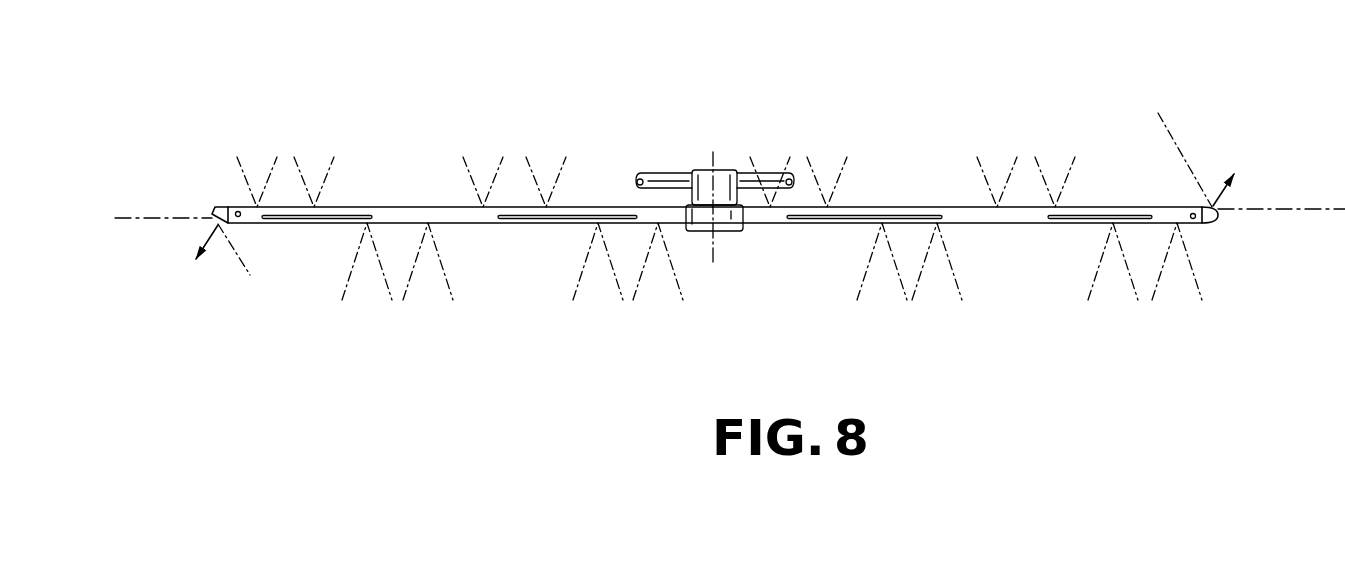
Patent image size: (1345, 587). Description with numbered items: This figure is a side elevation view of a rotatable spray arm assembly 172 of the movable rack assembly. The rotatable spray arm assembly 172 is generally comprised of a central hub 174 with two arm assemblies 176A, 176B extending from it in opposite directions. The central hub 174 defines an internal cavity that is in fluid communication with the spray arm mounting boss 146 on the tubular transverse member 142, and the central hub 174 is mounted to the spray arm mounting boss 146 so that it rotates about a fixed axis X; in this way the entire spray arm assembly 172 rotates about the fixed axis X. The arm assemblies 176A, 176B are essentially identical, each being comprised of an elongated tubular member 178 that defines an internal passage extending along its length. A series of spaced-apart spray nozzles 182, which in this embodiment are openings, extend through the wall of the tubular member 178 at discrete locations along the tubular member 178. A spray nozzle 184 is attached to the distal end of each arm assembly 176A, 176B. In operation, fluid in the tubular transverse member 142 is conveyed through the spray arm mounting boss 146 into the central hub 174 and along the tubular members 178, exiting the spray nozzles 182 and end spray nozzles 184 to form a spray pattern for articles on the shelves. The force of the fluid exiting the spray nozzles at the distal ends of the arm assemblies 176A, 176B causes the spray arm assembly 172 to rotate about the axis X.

The tubular transverse member 142 is at (766, 185).
The spray arm mounting boss 146 is at (707, 182).
The rotatable spray arm assembly 172 is at (720, 210).
The central hub 174 is at (698, 215).
The arm assembly 176A is at (416, 200).
The arm assembly 176B is at (1094, 202).
The elongated tubular member 178 is at (480, 219).
The spray nozzles 182 is at (367, 224).
The spray nozzle 184 is at (211, 211).
The fixed axis X is at (713, 267).